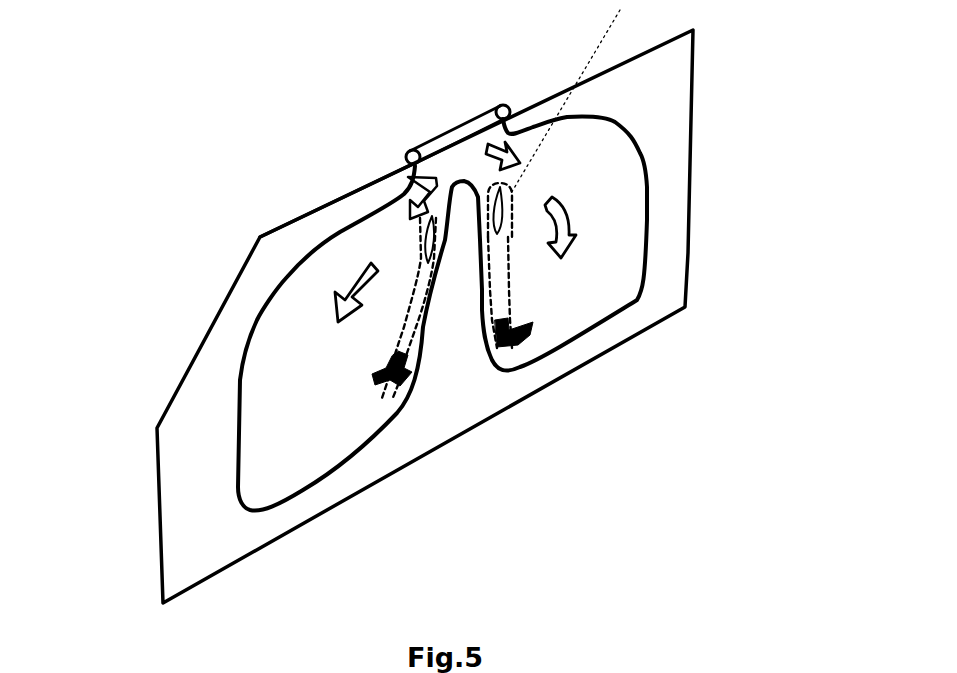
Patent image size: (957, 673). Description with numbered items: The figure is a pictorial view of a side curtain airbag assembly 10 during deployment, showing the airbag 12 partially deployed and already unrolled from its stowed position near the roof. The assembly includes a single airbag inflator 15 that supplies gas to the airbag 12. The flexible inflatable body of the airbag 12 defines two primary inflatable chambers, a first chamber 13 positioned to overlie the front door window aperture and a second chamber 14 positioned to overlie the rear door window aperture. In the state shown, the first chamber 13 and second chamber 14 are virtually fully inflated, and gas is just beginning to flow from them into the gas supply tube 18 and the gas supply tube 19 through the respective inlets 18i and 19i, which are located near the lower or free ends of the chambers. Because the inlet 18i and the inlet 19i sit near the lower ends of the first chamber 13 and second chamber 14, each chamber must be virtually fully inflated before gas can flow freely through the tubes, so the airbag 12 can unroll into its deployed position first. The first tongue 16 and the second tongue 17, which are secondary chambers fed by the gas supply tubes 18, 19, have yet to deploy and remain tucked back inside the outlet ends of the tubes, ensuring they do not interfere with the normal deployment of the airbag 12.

The side curtain airbag assembly 10 is at (260, 237).
The airbag 12 is at (207, 325).
The first chamber 13 is at (267, 302).
The second chamber 14 is at (650, 197).
The airbag inflator 15 is at (407, 150).
The first tongue 16 is at (422, 242).
The second tongue 17 is at (504, 212).
The gas supply tube 18 is at (405, 328).
The inlet 18i is at (398, 385).
The gas supply tube 19 is at (507, 278).
The inlet 19i is at (512, 357).